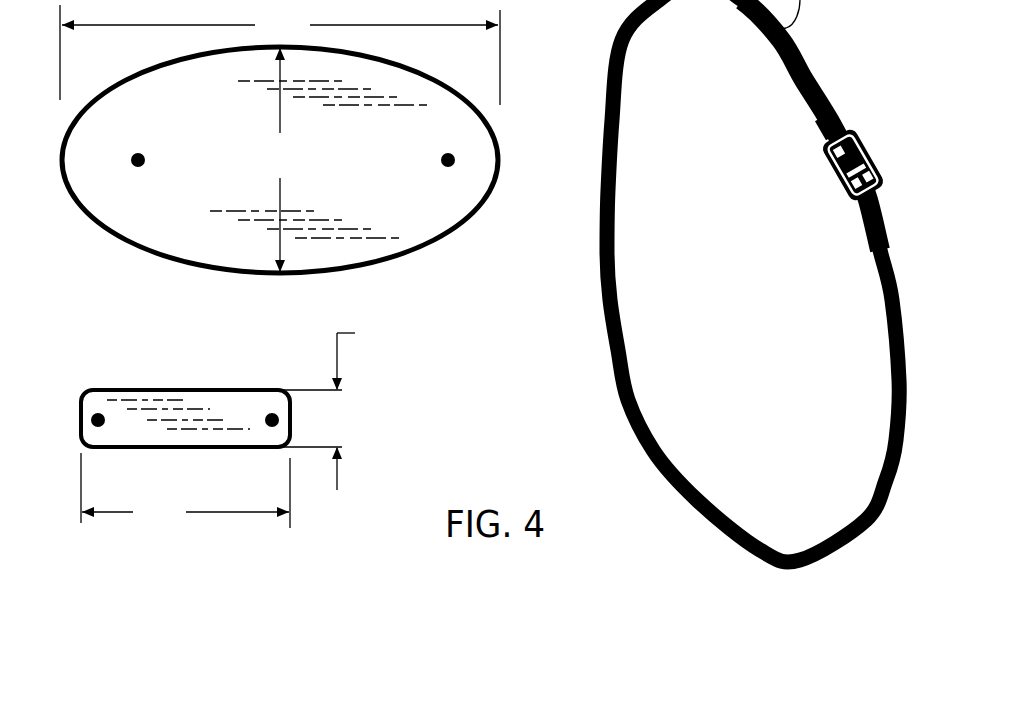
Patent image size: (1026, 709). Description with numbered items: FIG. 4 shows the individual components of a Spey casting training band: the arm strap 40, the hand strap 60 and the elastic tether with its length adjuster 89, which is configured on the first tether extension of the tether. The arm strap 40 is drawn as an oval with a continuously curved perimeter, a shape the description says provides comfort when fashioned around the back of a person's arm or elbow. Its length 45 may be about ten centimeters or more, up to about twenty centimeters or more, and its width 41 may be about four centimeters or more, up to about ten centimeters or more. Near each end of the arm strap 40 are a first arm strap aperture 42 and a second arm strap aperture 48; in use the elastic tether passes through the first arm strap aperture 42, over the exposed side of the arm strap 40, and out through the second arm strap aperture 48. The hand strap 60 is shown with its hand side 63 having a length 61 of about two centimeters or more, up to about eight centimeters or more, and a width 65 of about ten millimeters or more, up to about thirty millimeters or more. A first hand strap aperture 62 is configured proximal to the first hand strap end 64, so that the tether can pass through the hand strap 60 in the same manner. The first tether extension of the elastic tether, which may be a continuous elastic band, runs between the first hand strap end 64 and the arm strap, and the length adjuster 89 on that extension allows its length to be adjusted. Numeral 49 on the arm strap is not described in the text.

The arm strap 40 is at (402, 213).
The width 41 is at (280, 160).
The first arm strap aperture 42 is at (138, 164).
The length 45 is at (280, 55).
The second arm strap aperture 48 is at (444, 170).
The patch perimeter edge 49 is at (147, 250).
The hand strap 60 is at (211, 402).
The length 61 is at (185, 490).
The first hand strap aperture 62 is at (105, 413).
The hand side 63 is at (167, 405).
The first hand strap end 64 is at (278, 412).
The width 65 is at (336, 402).
The length adjuster 89 is at (855, 127).